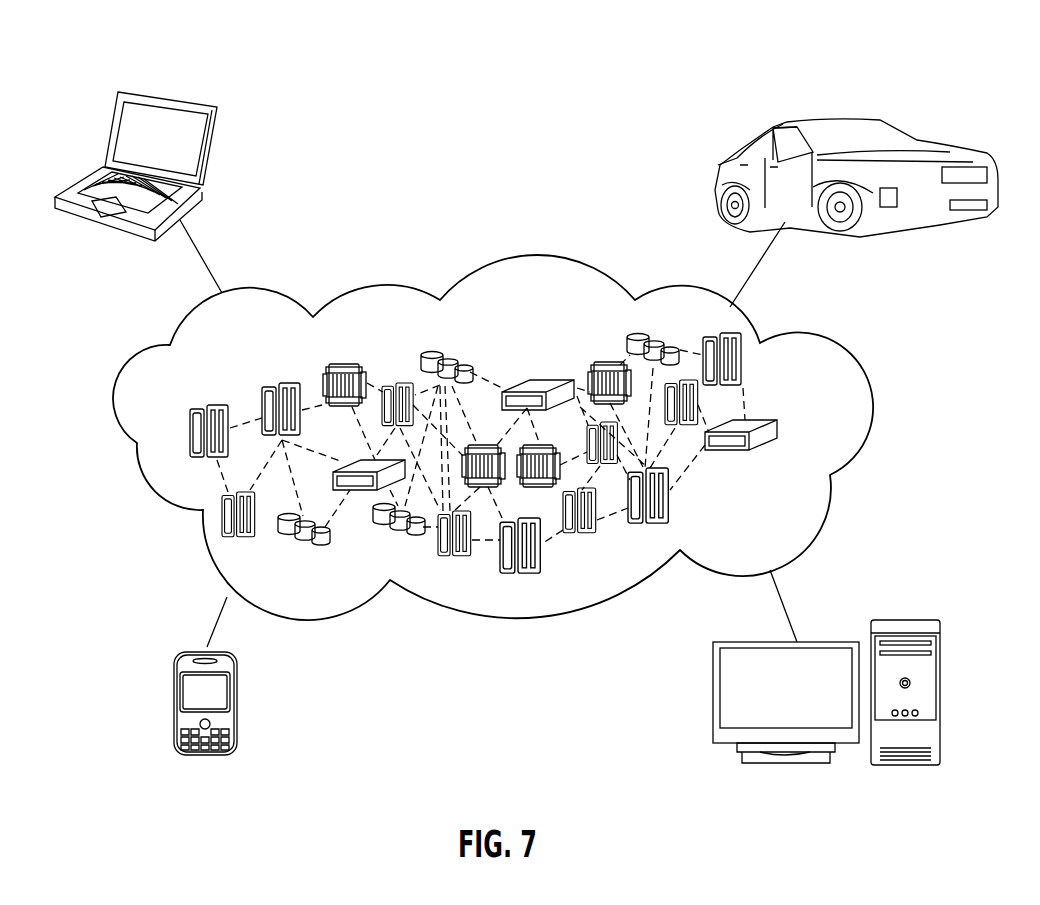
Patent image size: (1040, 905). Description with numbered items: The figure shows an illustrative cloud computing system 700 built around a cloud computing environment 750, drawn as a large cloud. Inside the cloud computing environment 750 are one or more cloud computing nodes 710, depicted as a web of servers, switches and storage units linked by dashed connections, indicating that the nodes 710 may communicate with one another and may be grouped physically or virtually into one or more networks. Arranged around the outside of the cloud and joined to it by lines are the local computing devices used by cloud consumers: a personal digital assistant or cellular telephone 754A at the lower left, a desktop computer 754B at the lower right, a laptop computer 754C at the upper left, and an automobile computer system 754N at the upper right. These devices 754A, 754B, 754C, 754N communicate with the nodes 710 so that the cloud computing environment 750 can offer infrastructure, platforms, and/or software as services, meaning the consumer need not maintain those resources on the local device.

The computing environment 700 is at (505, 46).
The cloud computing environment 750 is at (838, 357).
The cloud computing nodes 710 is at (813, 433).
The personal digital assistant or cellular telephone 754A is at (172, 710).
The desktop computer 754B is at (909, 620).
The laptop computer 754C is at (210, 152).
The automobile computer system 754N is at (722, 160).